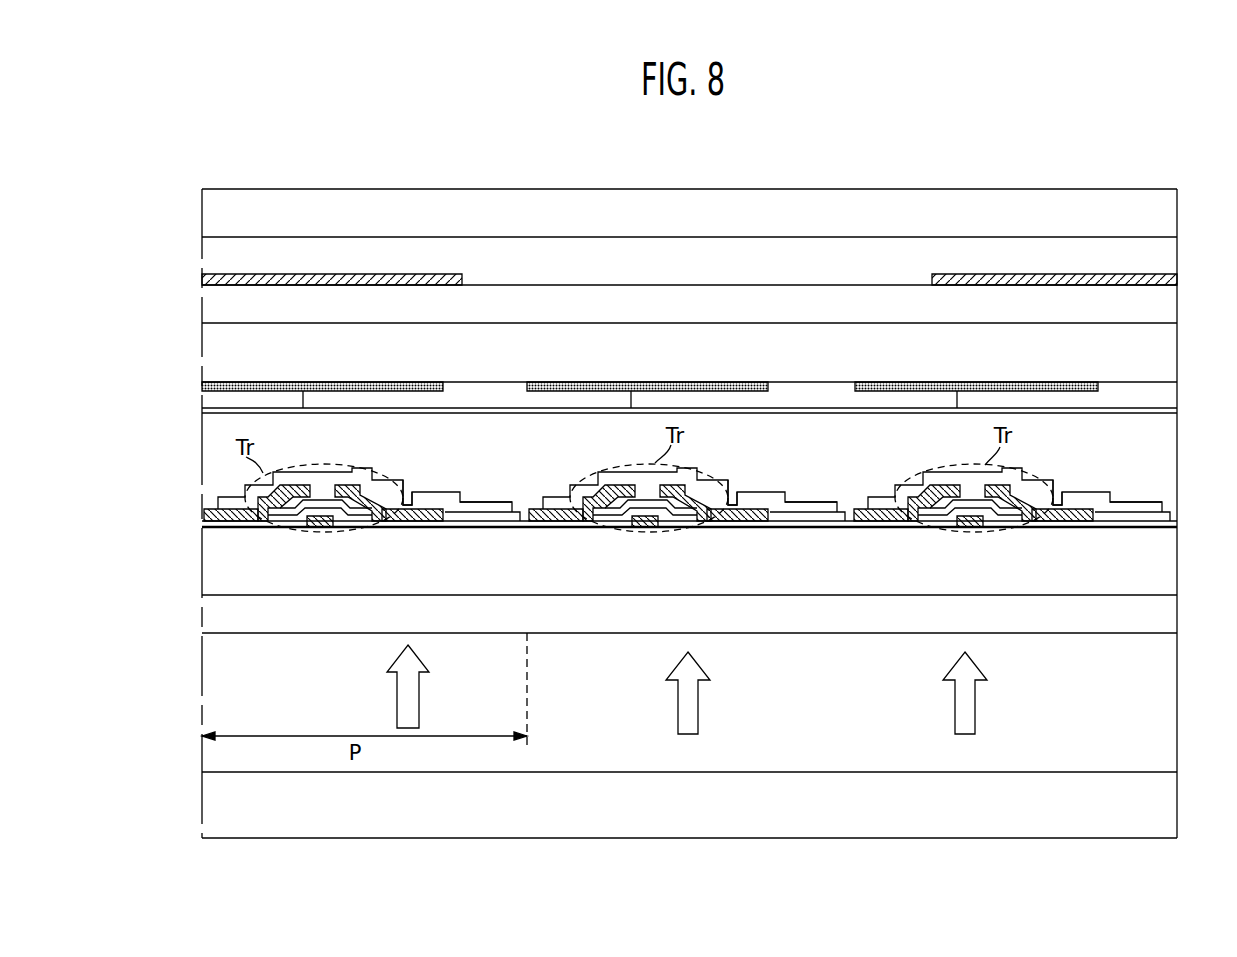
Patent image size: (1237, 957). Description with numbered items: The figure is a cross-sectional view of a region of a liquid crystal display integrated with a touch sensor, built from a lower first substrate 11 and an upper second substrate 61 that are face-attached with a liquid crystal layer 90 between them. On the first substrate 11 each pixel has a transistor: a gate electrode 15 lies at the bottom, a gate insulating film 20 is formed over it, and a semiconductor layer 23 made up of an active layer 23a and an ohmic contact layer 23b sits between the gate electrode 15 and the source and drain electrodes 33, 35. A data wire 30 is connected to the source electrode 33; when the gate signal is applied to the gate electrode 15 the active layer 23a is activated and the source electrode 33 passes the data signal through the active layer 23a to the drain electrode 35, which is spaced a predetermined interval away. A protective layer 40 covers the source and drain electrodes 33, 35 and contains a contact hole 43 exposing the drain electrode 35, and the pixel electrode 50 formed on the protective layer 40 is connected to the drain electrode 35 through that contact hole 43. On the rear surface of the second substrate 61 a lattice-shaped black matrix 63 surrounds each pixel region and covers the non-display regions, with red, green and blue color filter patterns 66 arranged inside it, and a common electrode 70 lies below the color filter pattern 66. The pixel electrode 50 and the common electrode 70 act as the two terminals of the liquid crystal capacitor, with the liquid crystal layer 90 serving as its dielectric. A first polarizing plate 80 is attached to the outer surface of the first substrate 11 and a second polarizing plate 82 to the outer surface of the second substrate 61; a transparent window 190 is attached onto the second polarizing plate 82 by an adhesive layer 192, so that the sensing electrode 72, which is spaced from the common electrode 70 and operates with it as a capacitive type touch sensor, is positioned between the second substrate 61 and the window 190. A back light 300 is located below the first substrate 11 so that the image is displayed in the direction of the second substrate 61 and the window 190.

The window 190 is at (1163, 212).
The adhesive layer 192 is at (1163, 257).
The sensing electrode 72 is at (1163, 284).
The second polarizing plate 82 is at (1163, 305).
The second substrate 61 is at (1163, 355).
The black matrix 63 is at (330, 382).
The color filter pattern 66 is at (818, 394).
The common electrode 70 is at (1163, 411).
The liquid crystal layer 90 is at (1163, 445).
The first substrate 11 is at (1163, 570).
The first polarizing plate 80 is at (1163, 620).
The back light 300 is at (1163, 805).
The gate insulating film 20 is at (460, 523).
The data wire 30 is at (212, 516).
The gate electrode 15 is at (325, 521).
The semiconductor layer 23 is at (632, 616).
The active layer 23a is at (273, 513).
The ohmic contact layer 23b is at (290, 514).
The source electrode 33 is at (293, 484).
The drain electrode 35 is at (341, 485).
The protective layer 40 is at (467, 510).
The contact hole 43 is at (413, 494).
The pixel electrode 50 is at (508, 502).